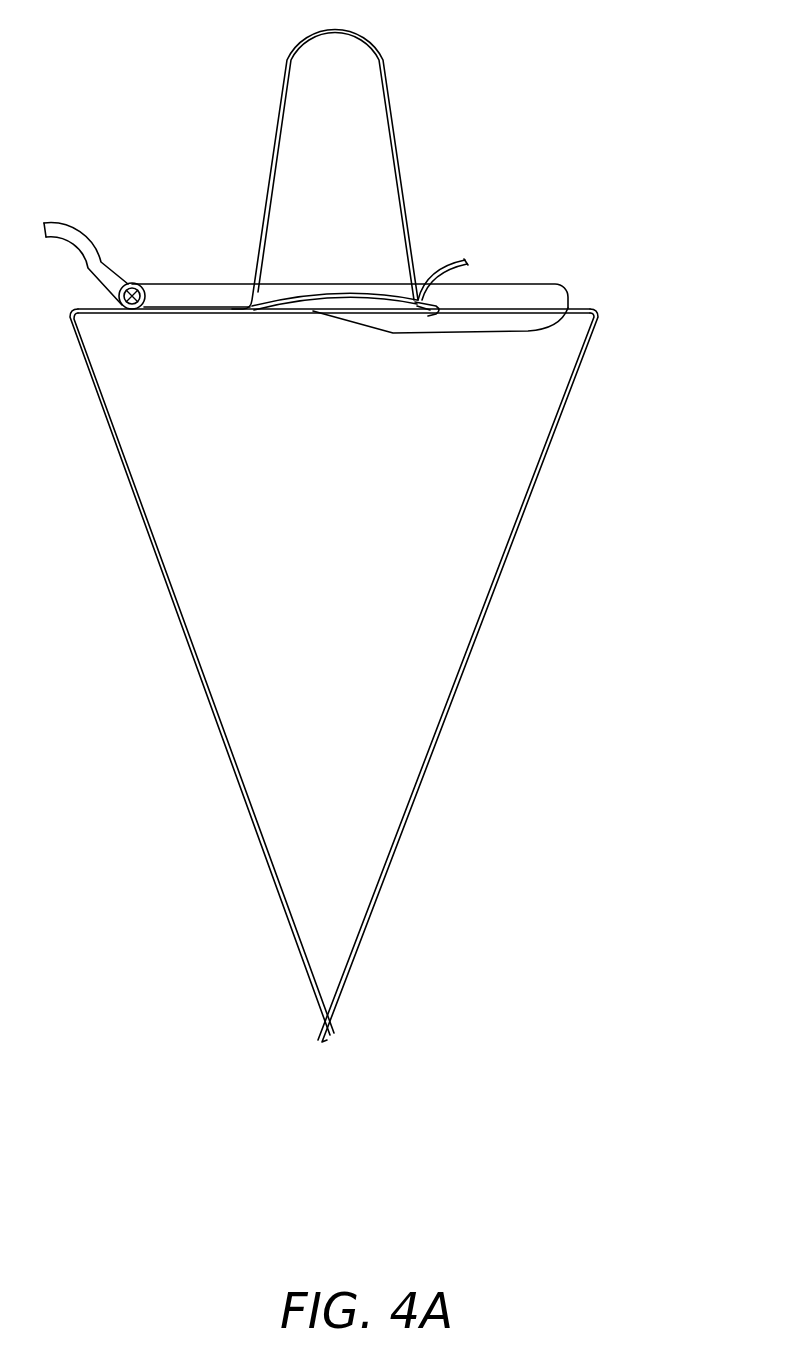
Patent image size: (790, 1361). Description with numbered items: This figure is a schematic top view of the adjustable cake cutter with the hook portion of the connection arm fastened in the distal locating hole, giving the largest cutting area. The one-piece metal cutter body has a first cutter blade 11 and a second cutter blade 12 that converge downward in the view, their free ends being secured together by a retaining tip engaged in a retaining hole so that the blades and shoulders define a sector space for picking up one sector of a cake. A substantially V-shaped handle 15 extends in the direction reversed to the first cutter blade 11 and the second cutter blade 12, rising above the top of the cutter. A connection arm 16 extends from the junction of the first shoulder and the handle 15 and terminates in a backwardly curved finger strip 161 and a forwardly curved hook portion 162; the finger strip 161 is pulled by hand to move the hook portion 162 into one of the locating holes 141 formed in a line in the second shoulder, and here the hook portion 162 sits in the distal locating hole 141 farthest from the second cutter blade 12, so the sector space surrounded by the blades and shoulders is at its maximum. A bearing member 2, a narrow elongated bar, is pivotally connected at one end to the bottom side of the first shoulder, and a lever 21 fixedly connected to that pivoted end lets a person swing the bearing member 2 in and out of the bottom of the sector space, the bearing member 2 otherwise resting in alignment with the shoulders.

The bearing member 2 is at (553, 297).
The first cutter blade 11 is at (197, 657).
The second cutter blade 12 is at (497, 582).
The V-shaped handle 15 is at (275, 132).
The connection arm 16 is at (327, 296).
The lever 21 is at (80, 232).
The locating holes 141 is at (472, 308).
The finger strip 161 is at (460, 258).
The hook portion 162 is at (430, 318).